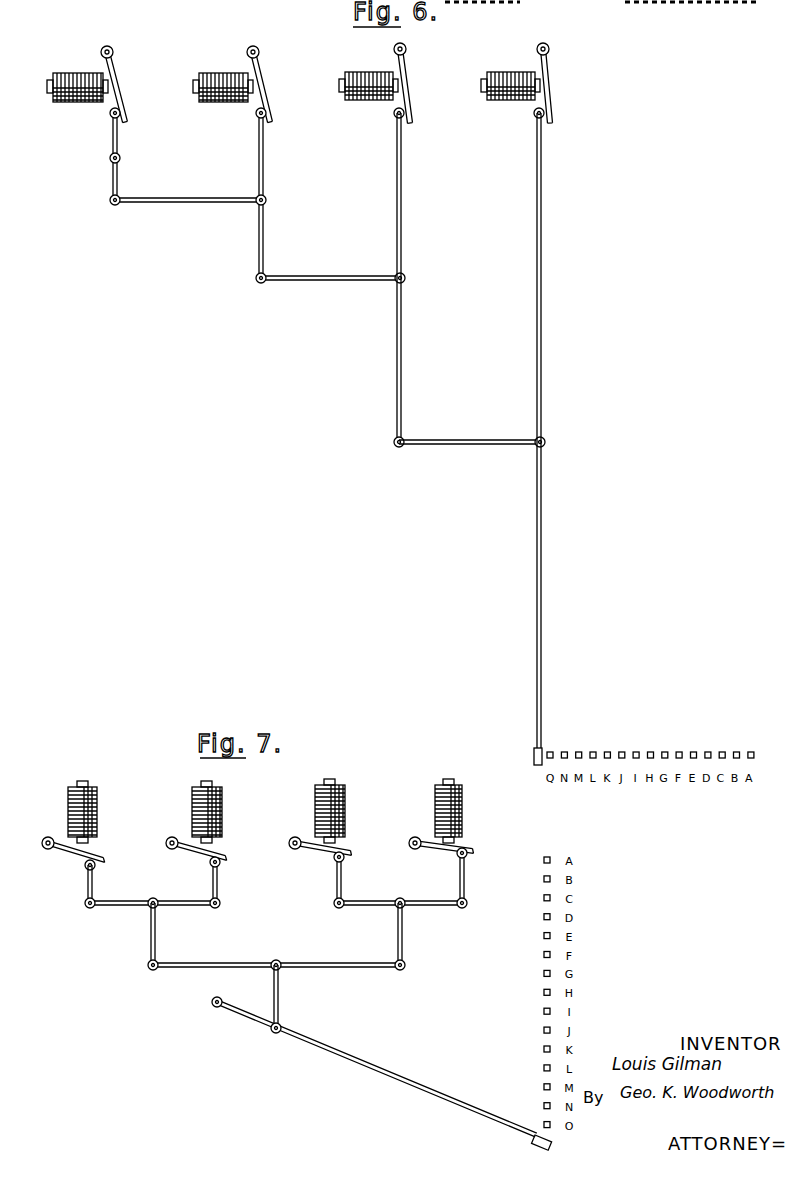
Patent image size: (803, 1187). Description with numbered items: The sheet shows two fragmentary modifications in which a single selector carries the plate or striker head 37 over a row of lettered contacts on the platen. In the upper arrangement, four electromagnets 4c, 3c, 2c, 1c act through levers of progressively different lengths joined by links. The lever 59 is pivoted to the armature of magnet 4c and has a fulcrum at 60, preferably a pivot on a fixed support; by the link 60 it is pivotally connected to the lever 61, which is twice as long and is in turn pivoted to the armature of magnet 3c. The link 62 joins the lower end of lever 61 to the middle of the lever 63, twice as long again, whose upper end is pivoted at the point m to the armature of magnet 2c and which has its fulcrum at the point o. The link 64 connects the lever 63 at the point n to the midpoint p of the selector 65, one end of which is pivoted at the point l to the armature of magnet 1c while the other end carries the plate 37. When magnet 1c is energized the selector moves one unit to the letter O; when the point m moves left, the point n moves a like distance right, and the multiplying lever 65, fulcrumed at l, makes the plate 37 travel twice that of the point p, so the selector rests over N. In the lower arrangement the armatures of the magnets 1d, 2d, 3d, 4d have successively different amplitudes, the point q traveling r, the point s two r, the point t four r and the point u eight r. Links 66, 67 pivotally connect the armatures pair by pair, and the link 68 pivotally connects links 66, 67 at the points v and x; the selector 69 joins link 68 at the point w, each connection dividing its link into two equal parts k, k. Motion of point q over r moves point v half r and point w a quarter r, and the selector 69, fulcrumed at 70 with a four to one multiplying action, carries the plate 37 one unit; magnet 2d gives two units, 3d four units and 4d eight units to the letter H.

In FIG. 6, the magnet 4c is at (87, 84).
In FIG. 6, the magnet 3c is at (232, 84).
In FIG. 6, the magnet 2c is at (376, 83).
In FIG. 6, the magnet 1c is at (517, 83).
In FIG. 6, the lever 59 is at (120, 140).
In FIG. 6, the fulcrum and link 60 is at (110, 159).
In FIG. 6, the lever 61 is at (263, 165).
In FIG. 6, the link 62 is at (330, 275).
In FIG. 6, the lever 63 is at (403, 228).
In FIG. 6, the link 64 is at (458, 438).
In FIG. 6, the selector 65 is at (543, 362).
In FIG. 6, the plate or striker head 37 is at (533, 753).
In FIG. 7, the plate or striker head 37 is at (535, 1142).
In FIG. 6, the point m is at (394, 115).
In FIG. 6, the point l is at (534, 113).
In FIG. 6, the point o is at (405, 277).
In FIG. 6, the point n is at (397, 449).
In FIG. 6, the point p is at (545, 442).
In FIG. 7, the magnet 4d is at (83, 821).
In FIG. 7, the magnet 3d is at (207, 820).
In FIG. 7, the magnet 2d is at (332, 817).
In FIG. 7, the magnet 1d is at (462, 815).
In FIG. 7, the point u is at (96, 866).
In FIG. 7, the point t is at (221, 863).
In FIG. 7, the point s is at (345, 857).
In FIG. 7, the point q is at (468, 853).
In FIG. 7, the equal link parts k is at (276, 910).
In FIG. 7, the point x is at (152, 892).
In FIG. 7, the point v is at (400, 890).
In FIG. 7, the point w is at (278, 959).
In FIG. 7, the link 66 is at (383, 936).
In FIG. 7, the link 67 is at (168, 907).
In FIG. 7, the link 68 is at (327, 967).
In FIG. 7, the selector 69 is at (387, 1062).
In FIG. 7, the fulcrum 70 is at (210, 1007).